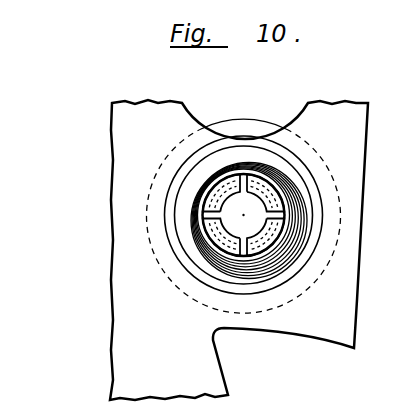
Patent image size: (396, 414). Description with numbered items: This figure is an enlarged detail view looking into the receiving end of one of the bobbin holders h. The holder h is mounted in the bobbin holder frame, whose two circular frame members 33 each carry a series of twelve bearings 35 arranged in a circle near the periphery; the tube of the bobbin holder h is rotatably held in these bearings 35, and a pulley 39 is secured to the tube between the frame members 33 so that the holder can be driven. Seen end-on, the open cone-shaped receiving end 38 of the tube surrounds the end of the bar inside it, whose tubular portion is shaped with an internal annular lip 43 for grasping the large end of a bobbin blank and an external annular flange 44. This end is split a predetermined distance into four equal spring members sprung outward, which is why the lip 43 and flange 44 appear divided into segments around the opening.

The circular frame member 33 is at (113, 138).
The bearing 35 is at (192, 157).
The cone-shaped receiving end 38 is at (288, 178).
The pulley 39 is at (246, 120).
The internal annular lip 43 is at (226, 240).
The external annular flange 44 is at (268, 240).
The bobbin holder h is at (197, 195).